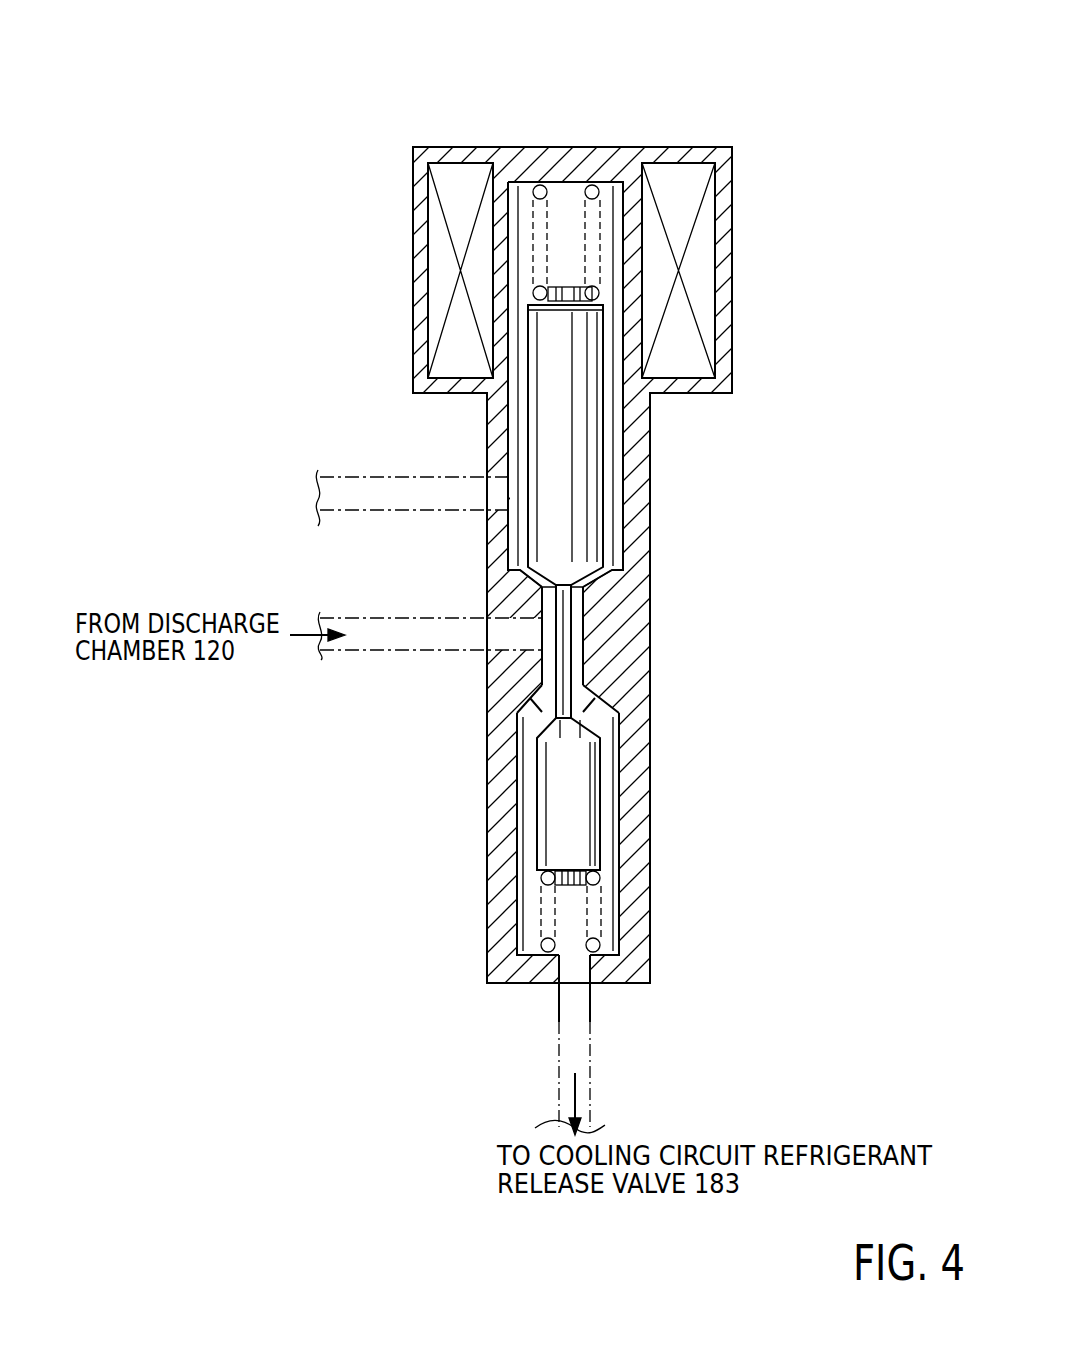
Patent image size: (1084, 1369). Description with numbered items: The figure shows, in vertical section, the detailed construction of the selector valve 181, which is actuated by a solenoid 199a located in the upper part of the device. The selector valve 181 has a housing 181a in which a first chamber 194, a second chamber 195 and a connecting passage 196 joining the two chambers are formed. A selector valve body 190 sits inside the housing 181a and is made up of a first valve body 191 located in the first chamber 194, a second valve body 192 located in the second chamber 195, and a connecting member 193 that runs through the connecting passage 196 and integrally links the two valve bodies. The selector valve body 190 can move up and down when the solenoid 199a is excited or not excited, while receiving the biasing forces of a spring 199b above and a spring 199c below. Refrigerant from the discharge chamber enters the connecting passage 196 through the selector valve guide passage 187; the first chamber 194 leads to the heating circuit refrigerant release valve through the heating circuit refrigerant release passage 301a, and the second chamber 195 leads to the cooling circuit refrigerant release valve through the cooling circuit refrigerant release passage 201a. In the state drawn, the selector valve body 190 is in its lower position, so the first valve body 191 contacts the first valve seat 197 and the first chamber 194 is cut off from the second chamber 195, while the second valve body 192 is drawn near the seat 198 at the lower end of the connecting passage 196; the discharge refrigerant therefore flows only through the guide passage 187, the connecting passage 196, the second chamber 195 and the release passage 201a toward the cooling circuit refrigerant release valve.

The selector valve 181 is at (818, 175).
The housing 181a is at (628, 668).
The solenoid 199a is at (668, 178).
The spring 199b is at (537, 217).
The spring 199c is at (597, 912).
The selector valve body 190 is at (570, 498).
The first valve body 191 is at (580, 527).
The first valve seat 197 is at (560, 570).
The connecting member 193 is at (567, 648).
The first chamber 194 is at (520, 437).
The second chamber 195 is at (527, 802).
The connecting passage 196 is at (546, 662).
The lower valve seat 198 is at (533, 724).
The second valve body 192 is at (582, 780).
The heating circuit refrigerant release passage 301a is at (335, 482).
The selector valve guide passage 187 is at (353, 657).
The cooling circuit refrigerant release passage 201a is at (590, 1068).